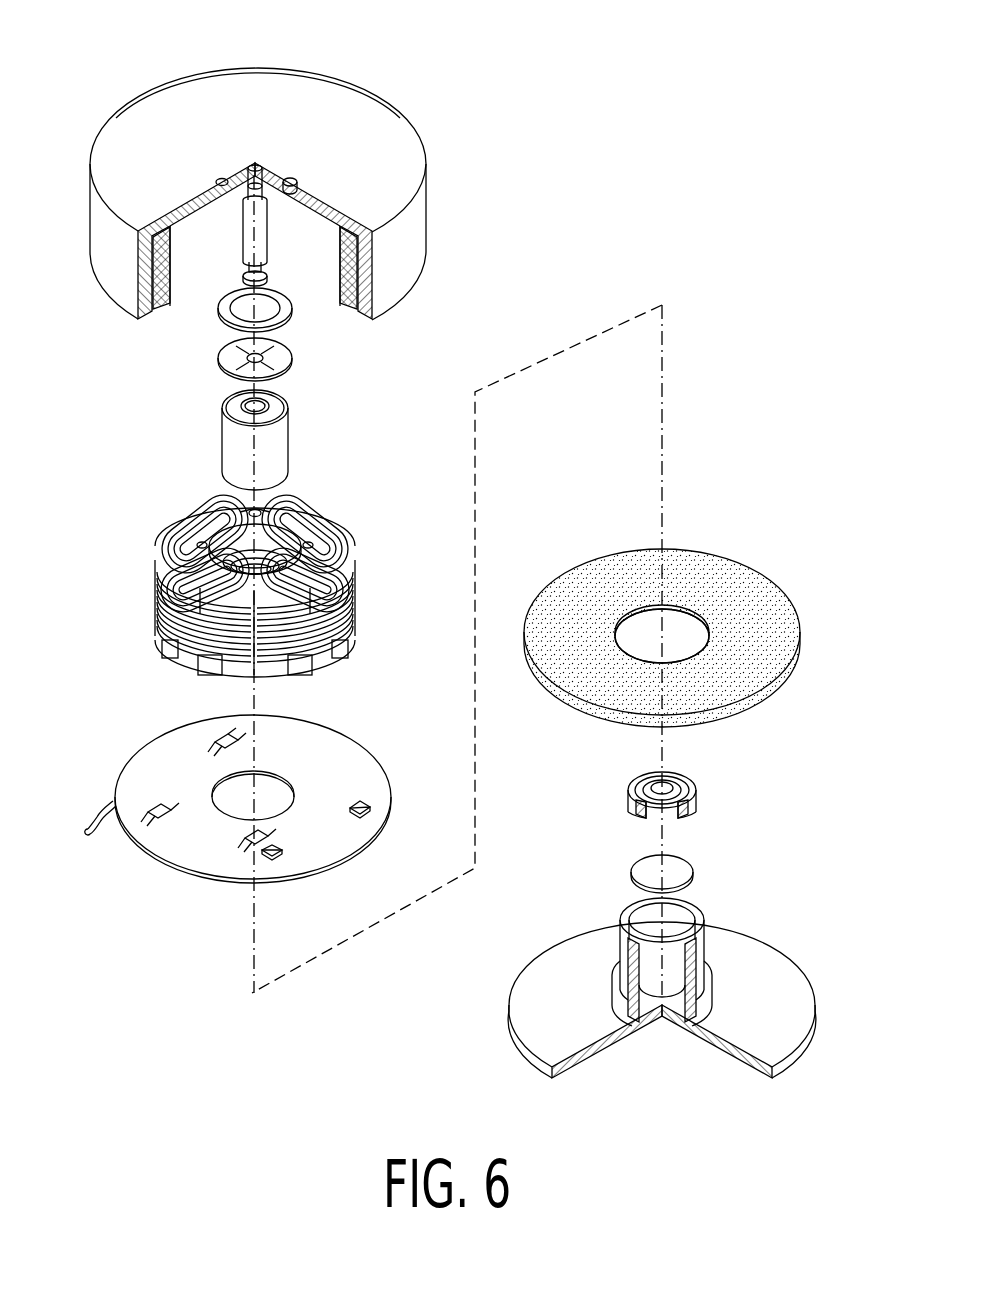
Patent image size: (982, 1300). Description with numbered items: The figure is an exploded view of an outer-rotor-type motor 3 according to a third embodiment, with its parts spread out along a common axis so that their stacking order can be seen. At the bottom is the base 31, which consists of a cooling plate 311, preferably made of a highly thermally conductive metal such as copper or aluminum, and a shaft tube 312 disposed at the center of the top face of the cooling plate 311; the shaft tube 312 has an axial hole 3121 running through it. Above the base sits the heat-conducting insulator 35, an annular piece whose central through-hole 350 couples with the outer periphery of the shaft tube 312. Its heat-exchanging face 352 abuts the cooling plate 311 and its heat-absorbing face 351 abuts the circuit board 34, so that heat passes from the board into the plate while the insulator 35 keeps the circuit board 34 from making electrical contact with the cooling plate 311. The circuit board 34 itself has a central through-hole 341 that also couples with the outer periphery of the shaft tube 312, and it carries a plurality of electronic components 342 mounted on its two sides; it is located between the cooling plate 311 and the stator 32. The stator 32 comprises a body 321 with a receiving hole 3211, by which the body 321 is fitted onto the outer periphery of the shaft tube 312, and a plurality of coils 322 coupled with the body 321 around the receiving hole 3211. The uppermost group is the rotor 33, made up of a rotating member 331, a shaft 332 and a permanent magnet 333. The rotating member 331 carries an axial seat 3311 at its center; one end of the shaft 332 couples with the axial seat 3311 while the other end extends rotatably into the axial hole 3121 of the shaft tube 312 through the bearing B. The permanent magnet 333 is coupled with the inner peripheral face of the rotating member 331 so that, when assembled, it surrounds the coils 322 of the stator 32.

The outer-rotor-type motor 3 is at (591, 108).
The rotor 33 is at (92, 190).
The rotating member 331 is at (373, 122).
The axial seat 3311 is at (299, 192).
The shaft 332 is at (246, 228).
The permanent magnet 333 is at (343, 280).
The bearing B is at (228, 438).
The stator 32 is at (333, 520).
The body 321 is at (240, 512).
The receiving hole 3211 is at (279, 536).
The coils 322 is at (185, 530).
The circuit board 34 is at (180, 857).
The through-hole 341 is at (281, 782).
The electronic components 342 is at (262, 855).
The heat-conducting insulator 35 is at (765, 690).
The through-hole 350 is at (690, 610).
The heat-absorbing face 351 is at (757, 585).
The heat-exchanging face 352 is at (724, 718).
The base 31 is at (527, 1050).
The cooling plate 311 is at (775, 970).
The shaft tube 312 is at (700, 944).
The axial hole 3121 is at (636, 914).